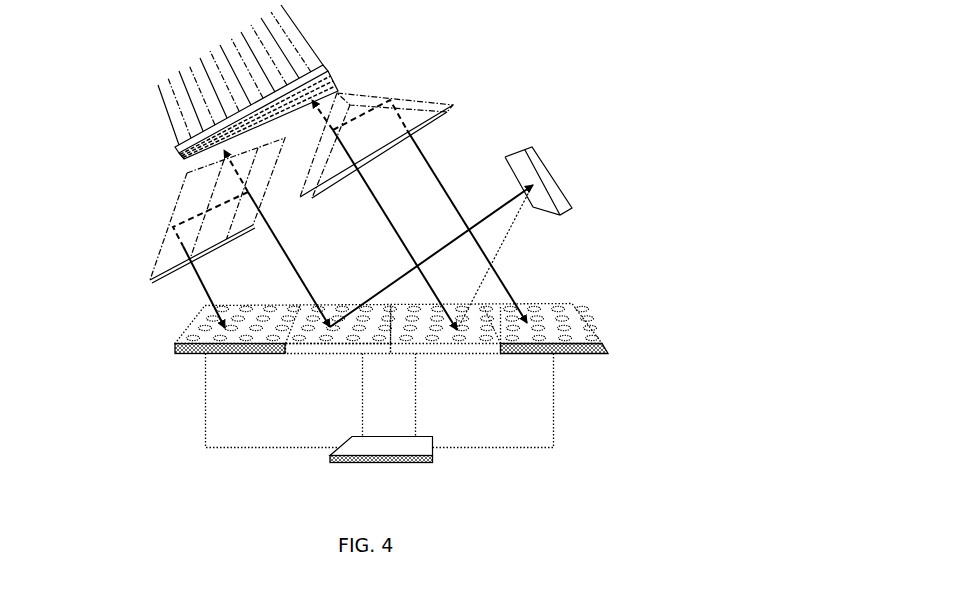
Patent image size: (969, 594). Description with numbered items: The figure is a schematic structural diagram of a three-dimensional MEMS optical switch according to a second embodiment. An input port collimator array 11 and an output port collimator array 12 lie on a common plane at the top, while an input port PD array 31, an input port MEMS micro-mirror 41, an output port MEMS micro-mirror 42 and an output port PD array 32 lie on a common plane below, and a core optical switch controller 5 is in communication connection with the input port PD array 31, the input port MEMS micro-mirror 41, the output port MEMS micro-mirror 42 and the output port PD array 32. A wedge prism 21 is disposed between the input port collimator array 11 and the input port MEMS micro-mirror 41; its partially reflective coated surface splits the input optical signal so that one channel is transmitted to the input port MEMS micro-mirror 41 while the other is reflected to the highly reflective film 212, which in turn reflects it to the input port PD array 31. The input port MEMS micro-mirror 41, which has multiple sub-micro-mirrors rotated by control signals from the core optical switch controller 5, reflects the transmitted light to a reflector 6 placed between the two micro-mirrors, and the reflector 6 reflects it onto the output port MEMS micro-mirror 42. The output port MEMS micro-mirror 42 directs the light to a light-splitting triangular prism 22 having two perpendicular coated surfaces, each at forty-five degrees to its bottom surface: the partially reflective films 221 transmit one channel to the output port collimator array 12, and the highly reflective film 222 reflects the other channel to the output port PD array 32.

The input port collimator array 11 is at (175, 150).
The output port collimator array 12 is at (322, 62).
The wedge prism 21 is at (187, 173).
The highly reflective film 212 is at (192, 208).
The light-splitting triangular prism 22 is at (429, 147).
The some reflective films 221 is at (433, 100).
The highly reflective film 222 is at (316, 178).
The reflector 6 is at (560, 177).
The input port PD array 31 is at (187, 332).
The output port PD array 32 is at (583, 318).
The input port MEMS micro-mirror 41 is at (337, 353).
The output port MEMS micro-mirror 42 is at (427, 353).
The core optical switch controller 5 is at (433, 463).